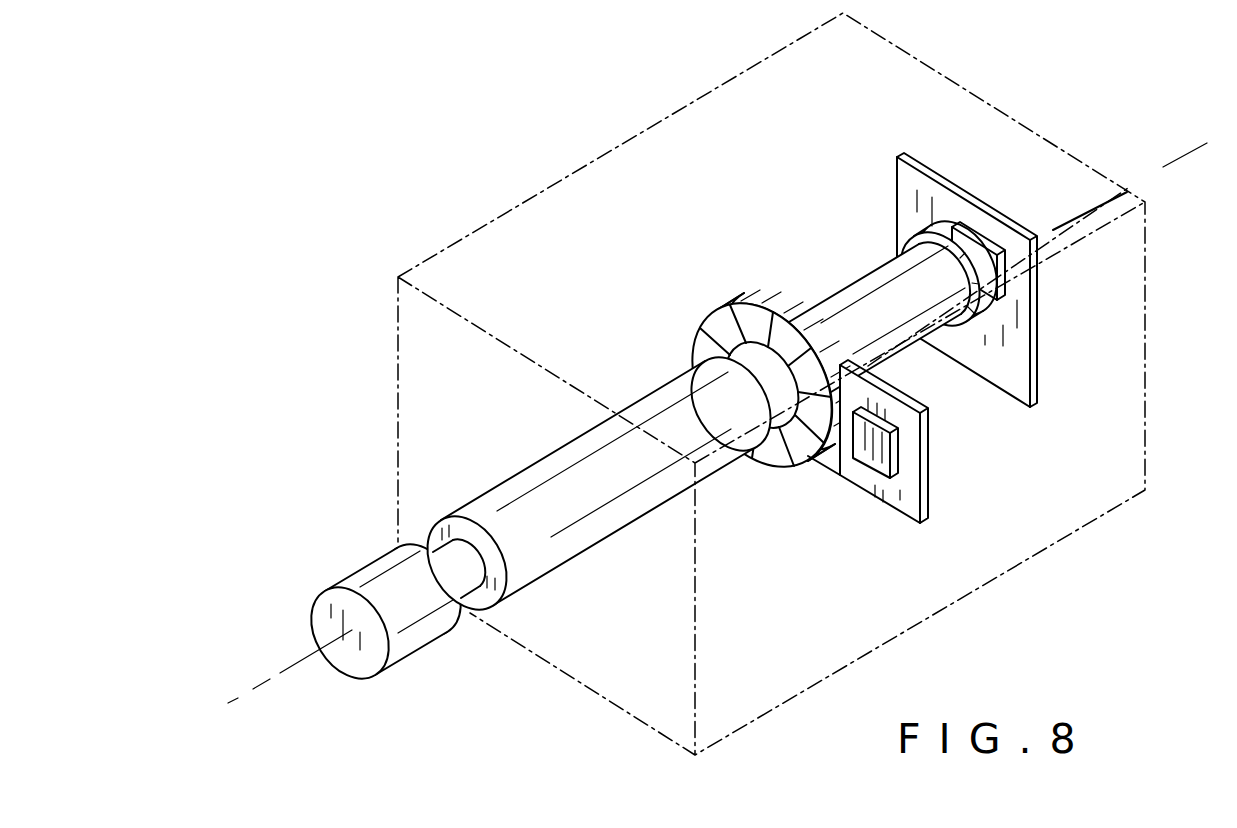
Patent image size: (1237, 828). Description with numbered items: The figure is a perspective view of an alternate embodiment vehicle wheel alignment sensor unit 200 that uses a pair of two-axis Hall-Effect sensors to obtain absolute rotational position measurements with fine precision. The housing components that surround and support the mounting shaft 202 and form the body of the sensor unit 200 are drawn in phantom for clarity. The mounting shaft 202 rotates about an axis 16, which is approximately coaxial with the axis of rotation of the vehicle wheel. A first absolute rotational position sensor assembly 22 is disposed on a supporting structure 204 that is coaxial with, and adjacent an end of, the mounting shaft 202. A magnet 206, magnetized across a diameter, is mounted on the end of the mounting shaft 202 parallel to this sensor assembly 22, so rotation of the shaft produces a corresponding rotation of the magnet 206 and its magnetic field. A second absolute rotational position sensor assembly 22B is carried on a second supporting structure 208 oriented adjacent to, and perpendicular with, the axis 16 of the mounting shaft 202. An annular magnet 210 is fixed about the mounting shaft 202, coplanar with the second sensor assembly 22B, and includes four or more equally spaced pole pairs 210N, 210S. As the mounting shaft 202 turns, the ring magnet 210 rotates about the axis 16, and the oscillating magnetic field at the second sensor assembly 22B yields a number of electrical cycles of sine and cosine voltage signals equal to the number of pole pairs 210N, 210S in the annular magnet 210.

The vehicle wheel alignment sensor unit 200 is at (936, 69).
The axis 16 is at (718, 423).
The absolute rotational position sensor assembly 22 is at (997, 271).
The second absolute rotational position sensor assembly 22B is at (878, 467).
The mounting shaft 202 is at (590, 455).
The supporting structure 204 is at (1017, 338).
The magnet 206 is at (984, 313).
The second supporting structure 208 is at (903, 496).
The annular magnet 210 is at (751, 291).
The north pole 210N is at (763, 317).
The south pole 210S is at (812, 310).